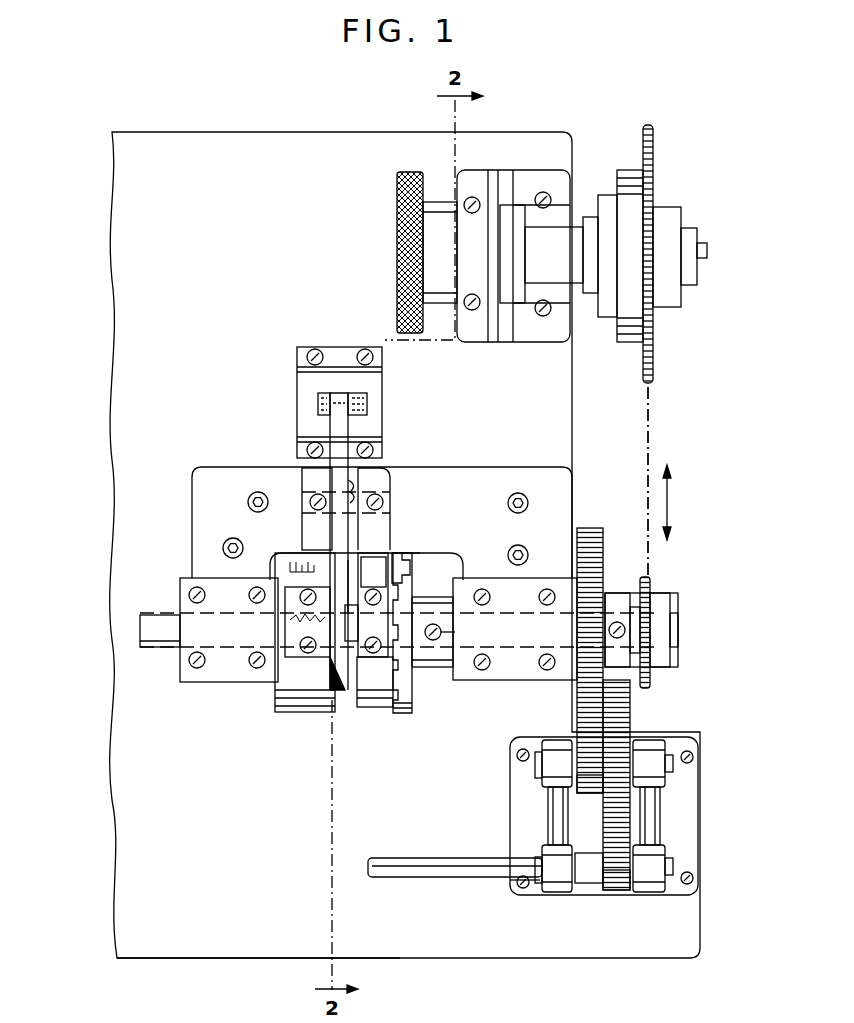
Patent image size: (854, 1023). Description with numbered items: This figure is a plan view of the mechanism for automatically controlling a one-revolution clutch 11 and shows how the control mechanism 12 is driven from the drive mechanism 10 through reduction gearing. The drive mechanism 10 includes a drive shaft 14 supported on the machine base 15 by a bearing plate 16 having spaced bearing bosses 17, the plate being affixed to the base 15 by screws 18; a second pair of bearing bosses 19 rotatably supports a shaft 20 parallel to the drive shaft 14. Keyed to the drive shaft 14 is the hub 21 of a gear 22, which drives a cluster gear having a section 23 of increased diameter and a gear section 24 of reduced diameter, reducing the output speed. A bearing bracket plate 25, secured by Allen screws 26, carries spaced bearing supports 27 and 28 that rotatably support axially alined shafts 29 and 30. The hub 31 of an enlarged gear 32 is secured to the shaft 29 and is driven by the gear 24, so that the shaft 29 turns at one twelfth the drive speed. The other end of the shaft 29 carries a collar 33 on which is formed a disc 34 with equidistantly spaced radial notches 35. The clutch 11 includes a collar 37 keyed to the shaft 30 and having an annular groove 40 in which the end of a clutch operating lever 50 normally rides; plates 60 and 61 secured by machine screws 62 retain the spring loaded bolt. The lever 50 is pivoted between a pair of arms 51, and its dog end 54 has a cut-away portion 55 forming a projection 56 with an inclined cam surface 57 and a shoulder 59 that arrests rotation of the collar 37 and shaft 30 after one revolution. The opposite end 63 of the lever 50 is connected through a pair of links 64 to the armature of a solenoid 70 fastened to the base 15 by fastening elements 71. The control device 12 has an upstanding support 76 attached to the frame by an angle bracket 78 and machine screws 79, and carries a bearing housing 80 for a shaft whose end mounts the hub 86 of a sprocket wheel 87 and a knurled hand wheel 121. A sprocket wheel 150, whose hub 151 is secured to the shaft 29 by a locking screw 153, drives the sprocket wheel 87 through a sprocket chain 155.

The drive shaft arrangement 10 is at (495, 887).
The one-way one-revolution clutch 11 is at (402, 543).
The control mechanism 12 is at (530, 182).
The drive shaft 14 is at (393, 870).
The base 15 is at (243, 945).
The bearing plate 16 is at (515, 770).
The bearing bosses 17 is at (556, 892).
The screws 18 is at (694, 757).
The bearing bosses 19 is at (545, 745).
The shaft 20 is at (673, 770).
The hub 21 is at (585, 886).
The gear 22 is at (620, 892).
The cluster gear section of increased diameter 23 is at (620, 722).
The gear section of reduced diameter 24 is at (585, 797).
The bearing bracket plate 25 is at (200, 482).
The Allen screws 26 is at (250, 505).
The bearing support 27 is at (527, 675).
The bearing support 28 is at (228, 675).
The shaft 29 is at (680, 628).
The shaft 30 is at (160, 630).
The hub 31 is at (610, 598).
The enlarged gear 32 is at (588, 533).
The collar 33 is at (437, 656).
The disc 34 is at (405, 713).
The radial notches 35 is at (380, 700).
The collar 37 is at (303, 710).
The annular groove 40 is at (342, 697).
The clutch operating lever 50 is at (333, 520).
The arms 51 is at (308, 478).
The dog end of lever 54 is at (280, 625).
The cut-away portion 55 is at (360, 622).
The projection 56 is at (441, 634).
The inclined cam surface 57 is at (337, 642).
The shoulder 59 is at (348, 612).
The plate 60 is at (295, 608).
The plate 61 is at (403, 577).
The machine screws 62 is at (373, 605).
The opposite end of lever 63 is at (338, 428).
The links 64 is at (324, 393).
The solenoid 70 is at (302, 395).
The fastening elements 71 is at (313, 352).
The upstanding support 76 is at (497, 180).
The angle bracket 78 is at (565, 187).
The machine screws 79 is at (551, 201).
The bearing housing 80 is at (551, 252).
The hub 86 is at (623, 345).
The sprocket wheel 87 is at (654, 358).
The knurled hand wheel 121 is at (414, 236).
The sprocket wheel 150 is at (652, 682).
The hub 151 is at (672, 652).
The locking screw 153 is at (680, 630).
The sprocket chain 155 is at (650, 450).